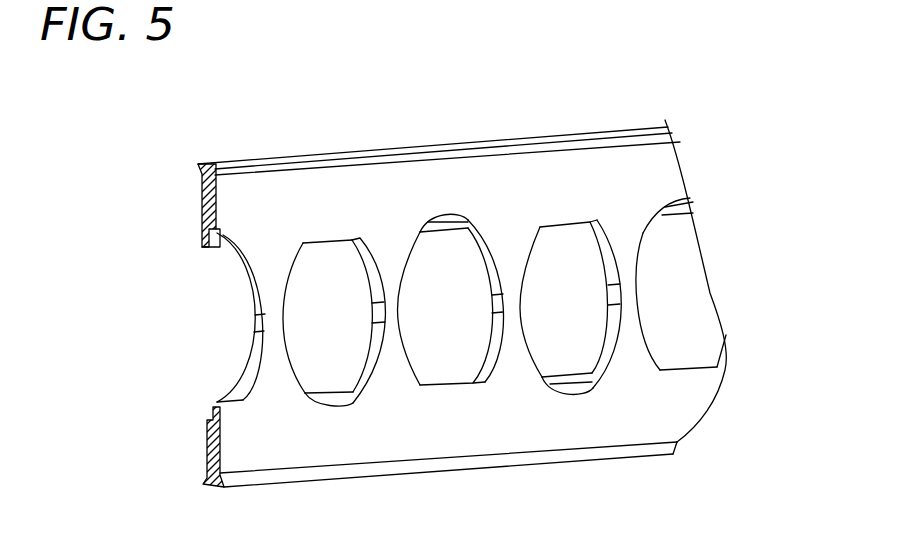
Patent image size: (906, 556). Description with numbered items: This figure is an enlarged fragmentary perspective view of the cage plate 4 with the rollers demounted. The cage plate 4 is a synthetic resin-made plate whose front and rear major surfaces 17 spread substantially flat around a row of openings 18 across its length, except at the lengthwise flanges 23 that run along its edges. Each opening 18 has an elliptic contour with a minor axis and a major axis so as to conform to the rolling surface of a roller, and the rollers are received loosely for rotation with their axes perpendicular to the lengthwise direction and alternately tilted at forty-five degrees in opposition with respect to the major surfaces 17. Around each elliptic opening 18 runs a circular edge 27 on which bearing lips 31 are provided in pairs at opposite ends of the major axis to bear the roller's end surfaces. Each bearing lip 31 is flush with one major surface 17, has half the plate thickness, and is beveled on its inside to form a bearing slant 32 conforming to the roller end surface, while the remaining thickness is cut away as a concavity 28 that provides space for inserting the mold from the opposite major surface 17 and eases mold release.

The cage plate 4 is at (436, 180).
The major surface 17 is at (200, 204).
The opening 18 is at (313, 273).
The lengthwise flange 23 is at (338, 160).
The circular edge 27 is at (257, 365).
The concavity 28 is at (470, 267).
The bearing lip 31 is at (333, 240).
The bearing slant 32 is at (210, 248).